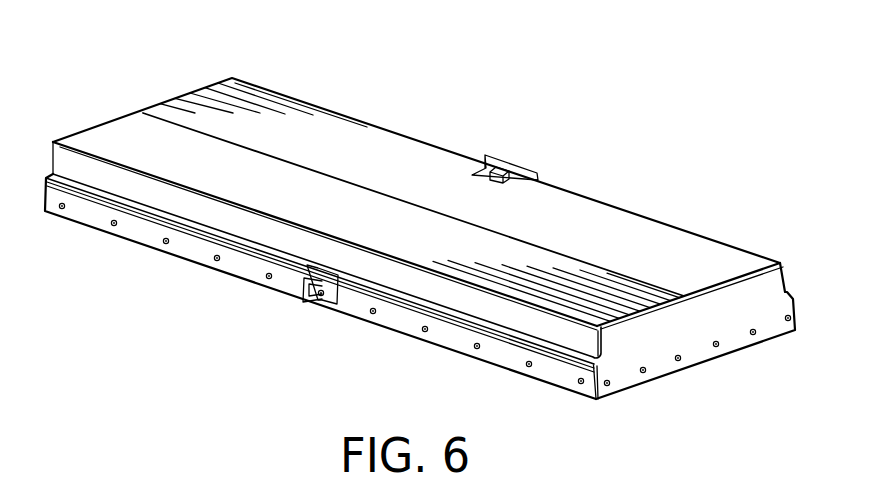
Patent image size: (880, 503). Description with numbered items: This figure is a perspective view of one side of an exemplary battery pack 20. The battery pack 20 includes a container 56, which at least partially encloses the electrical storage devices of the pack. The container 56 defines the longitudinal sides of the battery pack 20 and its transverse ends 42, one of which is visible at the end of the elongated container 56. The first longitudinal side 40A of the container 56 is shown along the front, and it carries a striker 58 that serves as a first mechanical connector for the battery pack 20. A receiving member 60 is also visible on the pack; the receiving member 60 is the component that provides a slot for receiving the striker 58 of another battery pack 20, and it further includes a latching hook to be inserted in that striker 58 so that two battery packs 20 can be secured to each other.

The battery pack 20 is at (398, 160).
The container 56 is at (705, 255).
The first longitudinal side 40A is at (424, 328).
The transverse ends 42 is at (688, 337).
The striker 58 is at (303, 300).
The receiving member 60 is at (502, 165).